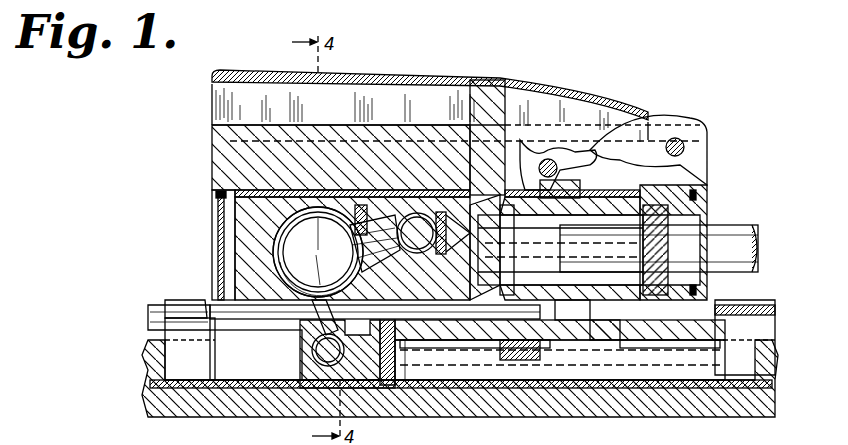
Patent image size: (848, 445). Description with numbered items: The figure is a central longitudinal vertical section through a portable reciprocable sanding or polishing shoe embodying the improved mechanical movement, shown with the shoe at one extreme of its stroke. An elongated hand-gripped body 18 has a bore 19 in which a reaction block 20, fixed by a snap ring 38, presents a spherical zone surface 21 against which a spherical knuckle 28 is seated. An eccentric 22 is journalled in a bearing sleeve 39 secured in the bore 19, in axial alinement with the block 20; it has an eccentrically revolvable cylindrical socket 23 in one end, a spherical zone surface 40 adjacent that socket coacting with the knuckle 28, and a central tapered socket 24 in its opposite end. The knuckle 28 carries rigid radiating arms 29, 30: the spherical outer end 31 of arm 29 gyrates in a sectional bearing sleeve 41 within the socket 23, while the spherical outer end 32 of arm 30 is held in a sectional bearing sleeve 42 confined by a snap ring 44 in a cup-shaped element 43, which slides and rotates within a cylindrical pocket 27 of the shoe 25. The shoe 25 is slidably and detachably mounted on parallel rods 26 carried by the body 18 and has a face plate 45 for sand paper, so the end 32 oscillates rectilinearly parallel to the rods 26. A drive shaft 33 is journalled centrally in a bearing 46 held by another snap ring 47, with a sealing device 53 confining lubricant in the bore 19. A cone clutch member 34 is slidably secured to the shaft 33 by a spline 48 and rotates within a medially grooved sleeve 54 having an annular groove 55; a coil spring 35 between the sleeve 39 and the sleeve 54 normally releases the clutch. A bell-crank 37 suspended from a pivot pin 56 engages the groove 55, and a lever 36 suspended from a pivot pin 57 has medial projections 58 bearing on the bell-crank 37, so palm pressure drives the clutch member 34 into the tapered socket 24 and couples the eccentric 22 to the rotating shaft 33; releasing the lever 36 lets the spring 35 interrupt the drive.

The supporting member or body 18 is at (214, 152).
The bore 19 is at (256, 190).
The block 20 is at (246, 232).
The spherical zone surface 21 is at (272, 252).
The eccentric 22 is at (444, 290).
The cylindrical socket 23 is at (380, 230).
The tapered socket 24 is at (480, 165).
The reciprocable element or shoe 25 is at (150, 363).
The parallel rods 26 is at (150, 318).
The cylindrical pocket 27 is at (295, 355).
The spherical motion transmitter or knuckle 28 is at (318, 254).
The arm 29 is at (360, 228).
The arm 30 is at (302, 312).
The spherical outer end 31 is at (417, 233).
The spherical outer end 32 is at (328, 333).
The drive shaft 33 is at (735, 245).
The cone clutch member 34 is at (560, 248).
The coil spring 35 is at (530, 300).
The lever 36 is at (265, 82).
The bell-crank 37 is at (592, 160).
The snap ring 38 is at (213, 207).
The bearing sleeve 39 is at (490, 350).
The spherical zone surface 40 is at (375, 290).
The sectional bearing sleeve 41 is at (410, 212).
The sectional bearing sleeve 42 is at (374, 392).
The cup-shaped element 43 is at (318, 390).
The snap ring 44 is at (390, 392).
The face plate 45 is at (583, 405).
The bearing 46 is at (740, 293).
The snap ring 47 is at (705, 190).
The spline 48 is at (670, 353).
The sealing device 53 is at (698, 215).
The medially grooved sleeve 54 is at (608, 310).
The annular groove 55 is at (565, 310).
The pivot pin 56 is at (548, 150).
The pivot pin 57 is at (692, 142).
The medial projections 58 is at (640, 130).